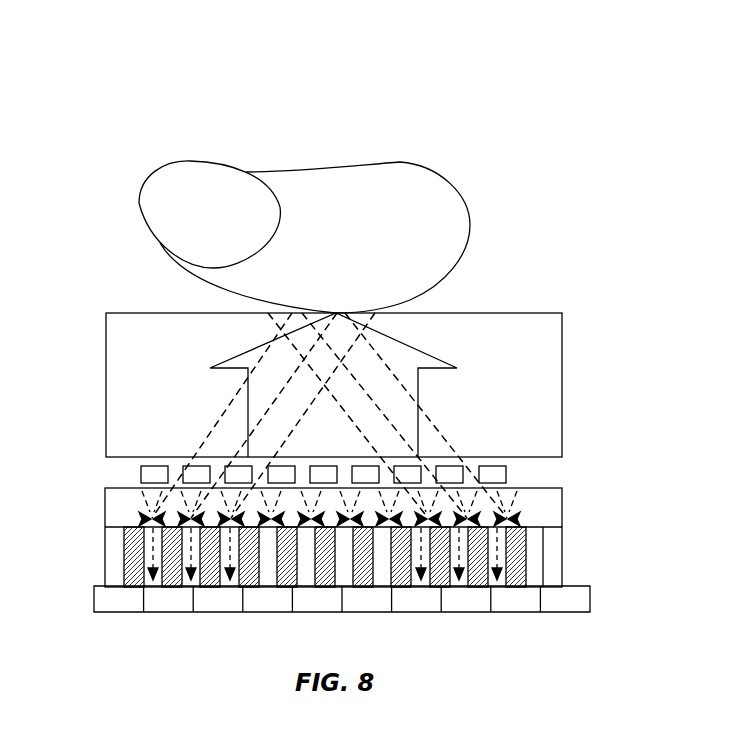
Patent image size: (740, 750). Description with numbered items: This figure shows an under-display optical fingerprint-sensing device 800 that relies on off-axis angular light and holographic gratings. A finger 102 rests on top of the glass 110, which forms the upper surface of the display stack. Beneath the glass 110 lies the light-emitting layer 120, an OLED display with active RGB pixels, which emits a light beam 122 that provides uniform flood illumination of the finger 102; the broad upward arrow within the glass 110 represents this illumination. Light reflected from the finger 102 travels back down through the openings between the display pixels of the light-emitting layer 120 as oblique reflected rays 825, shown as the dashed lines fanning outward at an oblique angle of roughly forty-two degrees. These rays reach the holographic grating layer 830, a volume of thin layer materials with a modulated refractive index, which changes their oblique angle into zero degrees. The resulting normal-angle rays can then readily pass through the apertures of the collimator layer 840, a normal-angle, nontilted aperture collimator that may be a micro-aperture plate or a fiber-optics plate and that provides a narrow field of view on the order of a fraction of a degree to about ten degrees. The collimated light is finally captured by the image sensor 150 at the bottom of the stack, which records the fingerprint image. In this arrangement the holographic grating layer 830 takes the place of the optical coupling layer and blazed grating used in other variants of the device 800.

The under-display optical fingerprint-sensing device 800 is at (55, 126).
The finger 102 is at (343, 253).
The glass 110 is at (106, 386).
The light beam 122 is at (232, 362).
The oblique reflected rays 825 is at (311, 403).
The light-emitting layer 120 is at (140, 476).
The holographic grating layer 830 is at (563, 511).
The collimator layer 840 is at (105, 552).
The image sensor 150 is at (592, 603).